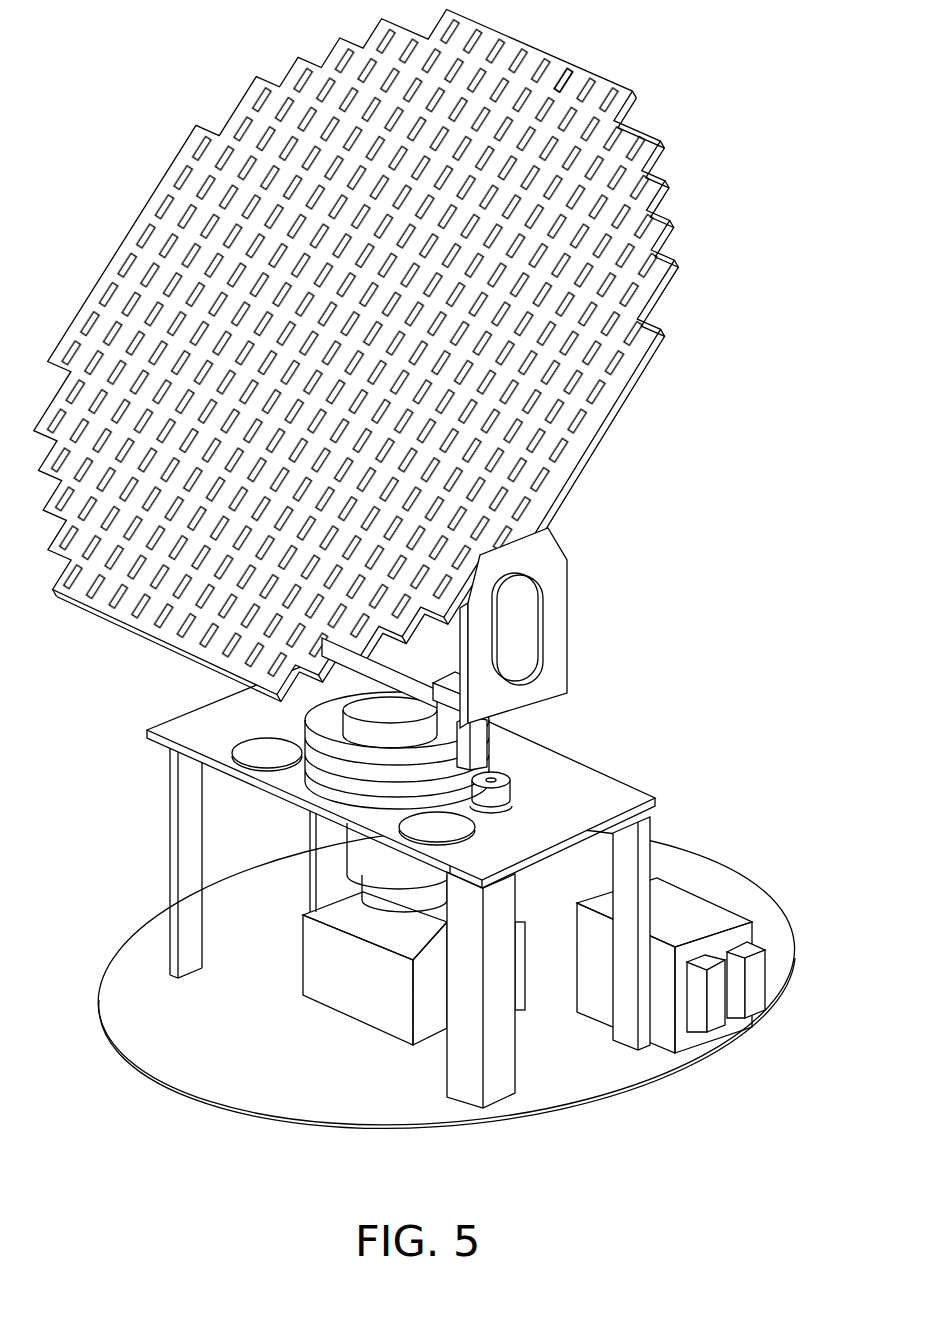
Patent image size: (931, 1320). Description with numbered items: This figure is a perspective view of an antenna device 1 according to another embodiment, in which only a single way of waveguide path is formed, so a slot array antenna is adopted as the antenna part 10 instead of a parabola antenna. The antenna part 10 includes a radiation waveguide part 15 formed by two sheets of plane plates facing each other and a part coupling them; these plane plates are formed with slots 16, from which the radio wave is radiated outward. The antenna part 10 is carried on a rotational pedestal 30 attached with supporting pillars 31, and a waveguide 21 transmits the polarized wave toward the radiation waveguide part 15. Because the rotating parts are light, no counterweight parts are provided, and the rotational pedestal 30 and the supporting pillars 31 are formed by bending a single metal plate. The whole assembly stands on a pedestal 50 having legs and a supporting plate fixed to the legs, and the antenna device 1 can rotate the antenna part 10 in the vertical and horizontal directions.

The antenna device 1 is at (425, 385).
The antenna part 10 is at (401, 356).
The radiation waveguide part 15 is at (575, 82).
The slots 16 is at (652, 263).
The waveguide 21 is at (466, 664).
The rotational pedestal 30 is at (512, 649).
The supporting pillars 31 is at (553, 570).
The pedestal 50 is at (708, 821).